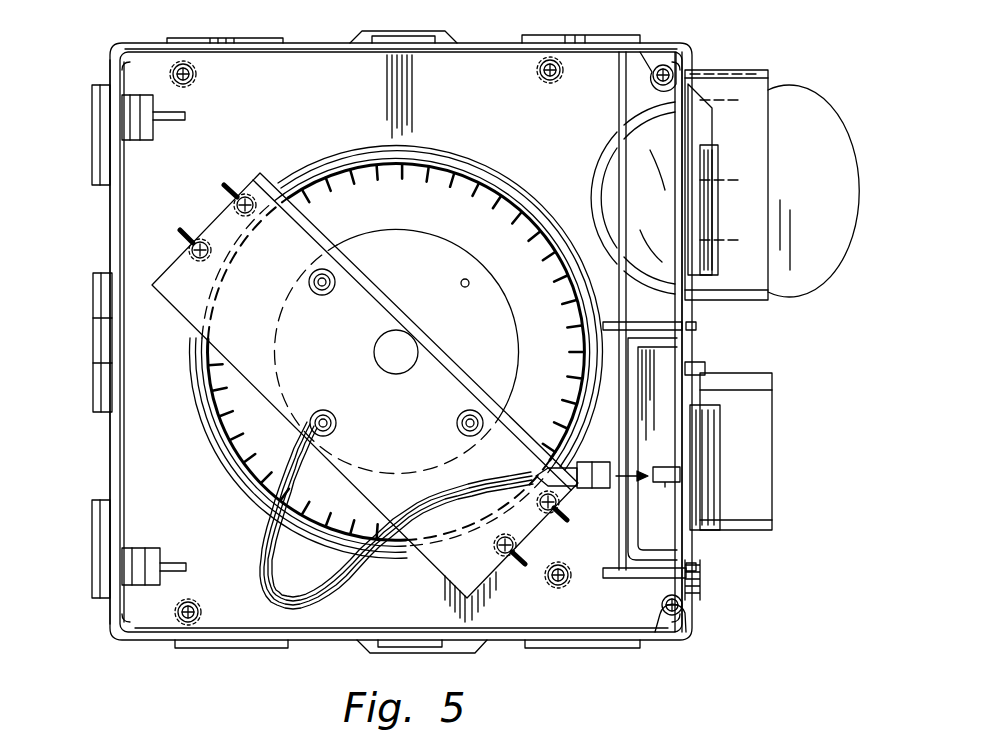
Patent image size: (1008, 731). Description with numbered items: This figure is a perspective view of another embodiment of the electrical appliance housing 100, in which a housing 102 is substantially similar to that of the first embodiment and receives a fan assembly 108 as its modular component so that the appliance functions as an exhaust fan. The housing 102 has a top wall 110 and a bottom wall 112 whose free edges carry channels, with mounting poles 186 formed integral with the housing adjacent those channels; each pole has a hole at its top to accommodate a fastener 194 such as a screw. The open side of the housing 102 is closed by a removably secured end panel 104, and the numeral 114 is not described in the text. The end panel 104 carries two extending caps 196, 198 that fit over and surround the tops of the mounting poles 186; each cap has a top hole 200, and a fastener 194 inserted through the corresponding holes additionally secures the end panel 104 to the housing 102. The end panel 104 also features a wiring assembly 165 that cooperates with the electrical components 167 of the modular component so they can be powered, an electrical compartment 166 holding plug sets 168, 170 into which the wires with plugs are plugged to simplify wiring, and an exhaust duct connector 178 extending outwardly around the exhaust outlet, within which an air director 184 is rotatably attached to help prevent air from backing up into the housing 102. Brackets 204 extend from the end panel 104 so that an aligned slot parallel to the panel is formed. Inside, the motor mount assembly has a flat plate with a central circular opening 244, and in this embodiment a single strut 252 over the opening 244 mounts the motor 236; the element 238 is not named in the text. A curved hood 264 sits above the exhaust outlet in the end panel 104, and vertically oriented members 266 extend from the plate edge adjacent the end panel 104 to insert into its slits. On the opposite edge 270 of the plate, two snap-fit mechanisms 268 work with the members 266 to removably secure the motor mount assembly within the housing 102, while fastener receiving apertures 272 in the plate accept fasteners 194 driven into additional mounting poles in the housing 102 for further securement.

The electrical appliance housing 100 is at (793, 64).
The housing 102 is at (108, 58).
The end panel 104 is at (692, 345).
The fan assembly 108 is at (345, 142).
The top wall 110 is at (510, 643).
The bottom wall 112 is at (500, 27).
The left side wall 114 is at (110, 240).
The wiring assembly 165 is at (777, 444).
The electrical compartment 166 is at (765, 478).
The electrical components 167 is at (270, 542).
The plug set 168 is at (668, 482).
The plug set 170 is at (592, 455).
The exhaust duct connector 178 is at (763, 70).
The air director 184 is at (822, 262).
The mounting poles 186 is at (648, 50).
The fastener 194 is at (185, 63).
The cap 196 is at (668, 626).
The cap 198 is at (672, 66).
The top hole 200 is at (619, 110).
The brackets 204 is at (92, 134).
The motor 236 is at (425, 237).
The fan blade 238 is at (505, 200).
The opening 244 is at (312, 178).
The single strut 252 is at (238, 345).
The curved hood 264 is at (642, 165).
The members 266 is at (698, 327).
The snap-fit mechanism 268 is at (140, 120).
The edge 270 is at (122, 246).
The fastener receiving apertures 272 is at (165, 65).